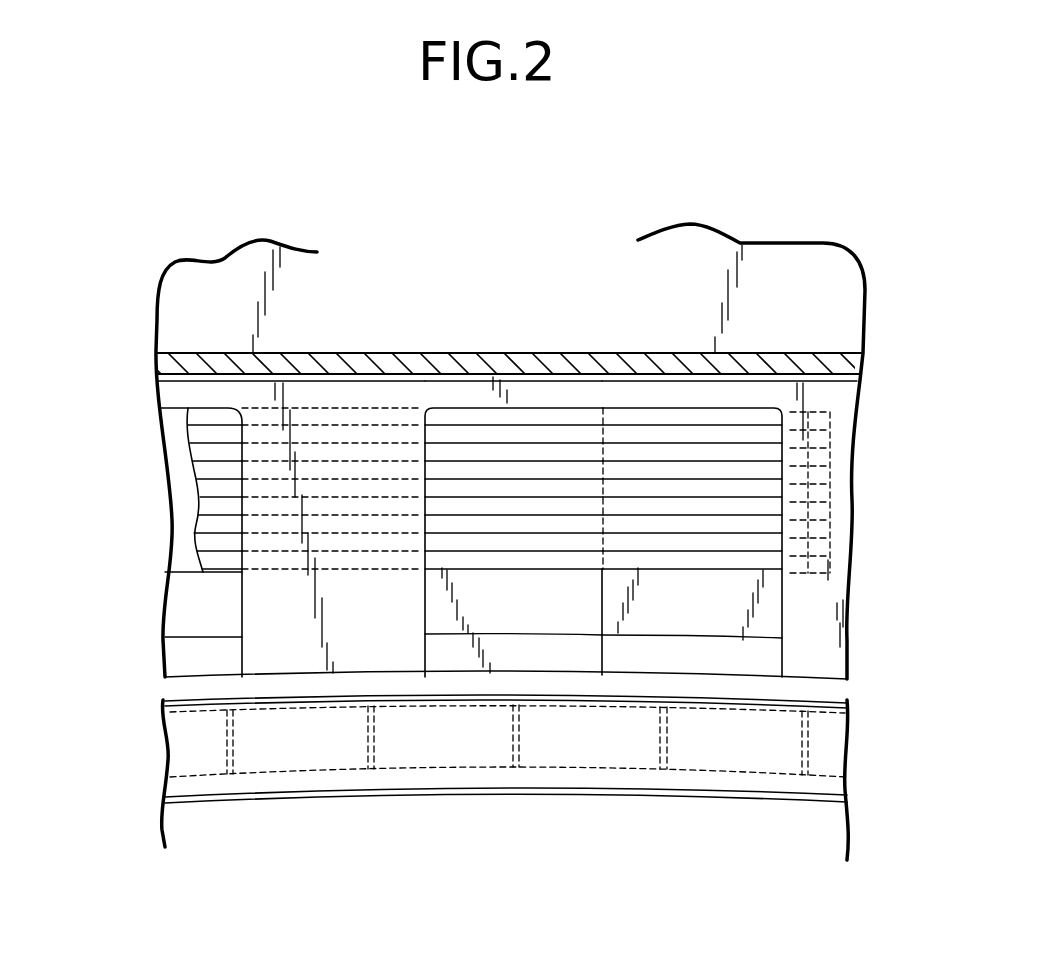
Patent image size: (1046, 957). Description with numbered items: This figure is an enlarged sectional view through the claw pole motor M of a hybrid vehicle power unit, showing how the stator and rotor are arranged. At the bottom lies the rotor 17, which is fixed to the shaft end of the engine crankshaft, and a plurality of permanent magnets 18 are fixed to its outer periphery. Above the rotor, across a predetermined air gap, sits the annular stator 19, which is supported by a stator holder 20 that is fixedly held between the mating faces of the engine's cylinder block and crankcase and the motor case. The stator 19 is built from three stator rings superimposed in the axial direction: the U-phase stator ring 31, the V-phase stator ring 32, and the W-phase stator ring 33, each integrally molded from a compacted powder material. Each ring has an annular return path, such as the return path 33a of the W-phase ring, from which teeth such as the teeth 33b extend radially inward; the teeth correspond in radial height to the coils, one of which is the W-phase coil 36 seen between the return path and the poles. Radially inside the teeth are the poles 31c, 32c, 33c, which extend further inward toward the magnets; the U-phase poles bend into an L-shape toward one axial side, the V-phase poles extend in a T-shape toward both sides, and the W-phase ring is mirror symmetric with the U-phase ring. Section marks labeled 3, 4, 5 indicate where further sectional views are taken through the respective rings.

The rotor 17 is at (165, 755).
The permanent magnets 18 is at (338, 763).
The stator 19 is at (146, 438).
The stator holder 20 is at (338, 362).
The U-phase stator ring 31 is at (758, 684).
The V-phase stator ring 32 is at (545, 680).
The W-phase stator ring 33 is at (207, 388).
The return path 33a is at (527, 392).
The teeth 33b is at (265, 507).
The poles 31c is at (698, 665).
The poles 32c is at (467, 652).
The poles 33c is at (295, 653).
The W-phase coil 36 is at (667, 437).
The claw pole motor M is at (125, 672).
The section line 3 is at (855, 228).
The section line 4 is at (663, 222).
The section line 5 is at (480, 222).